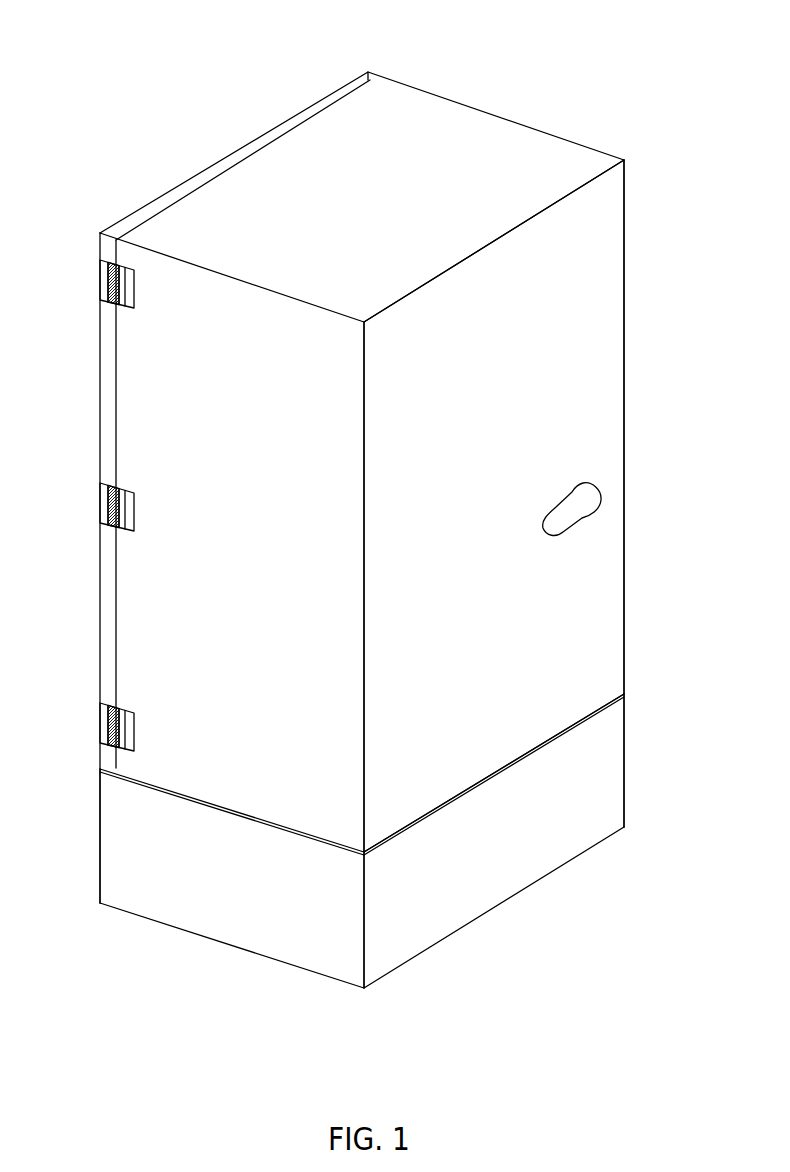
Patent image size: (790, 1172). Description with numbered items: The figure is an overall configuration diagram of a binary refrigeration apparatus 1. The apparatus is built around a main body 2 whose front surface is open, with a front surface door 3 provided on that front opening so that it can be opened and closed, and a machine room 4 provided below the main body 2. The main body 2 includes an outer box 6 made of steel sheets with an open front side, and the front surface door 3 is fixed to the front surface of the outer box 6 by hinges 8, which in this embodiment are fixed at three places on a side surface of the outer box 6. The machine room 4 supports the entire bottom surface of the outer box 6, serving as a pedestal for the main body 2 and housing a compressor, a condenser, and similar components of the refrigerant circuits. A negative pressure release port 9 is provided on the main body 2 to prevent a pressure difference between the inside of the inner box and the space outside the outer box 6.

The binary refrigeration apparatus 1 is at (585, 72).
The main body 2 is at (481, 124).
The front surface door 3 is at (363, 80).
The machine room 4 is at (194, 923).
The outer box 6 is at (586, 342).
The hinges 8 is at (97, 289).
The negative pressure release port 9 is at (583, 502).